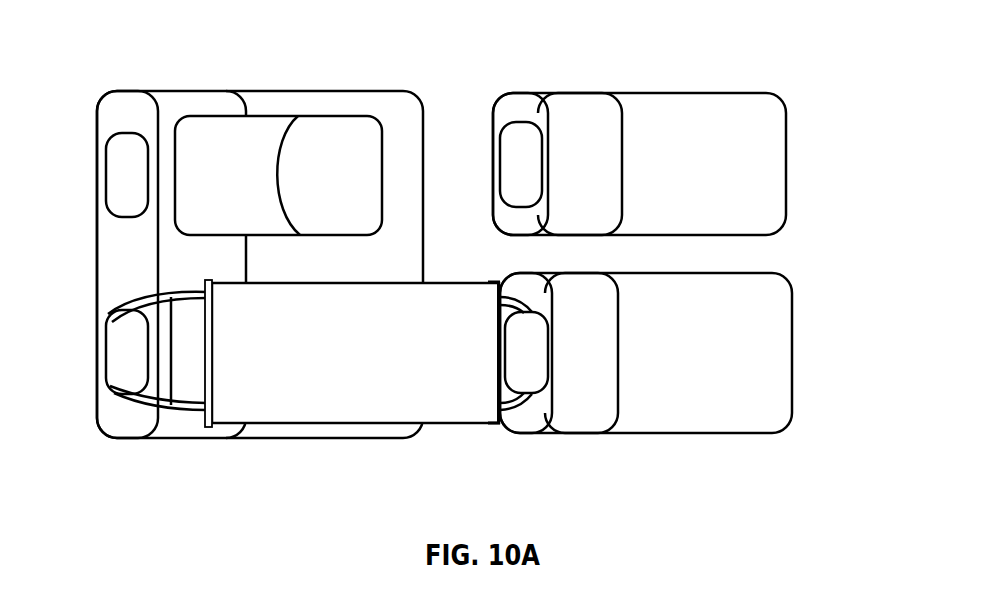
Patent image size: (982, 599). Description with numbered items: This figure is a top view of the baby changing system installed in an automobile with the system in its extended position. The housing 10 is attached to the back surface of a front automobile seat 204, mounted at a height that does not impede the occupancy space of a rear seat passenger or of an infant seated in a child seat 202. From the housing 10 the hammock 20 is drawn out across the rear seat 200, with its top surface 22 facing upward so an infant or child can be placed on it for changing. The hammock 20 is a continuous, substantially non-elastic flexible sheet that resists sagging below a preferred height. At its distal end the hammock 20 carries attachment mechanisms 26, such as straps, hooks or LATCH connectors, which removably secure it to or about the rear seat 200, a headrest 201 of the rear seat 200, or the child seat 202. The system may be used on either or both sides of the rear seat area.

The housing 10 is at (500, 425).
The hammock 20 is at (445, 425).
The top surface 22 is at (339, 401).
The attachment mechanisms 26 is at (173, 297).
The rear seat 200 is at (308, 90).
The headrest 201 is at (108, 172).
The child seat 202 is at (382, 177).
The front automobile seat 204 is at (786, 165).